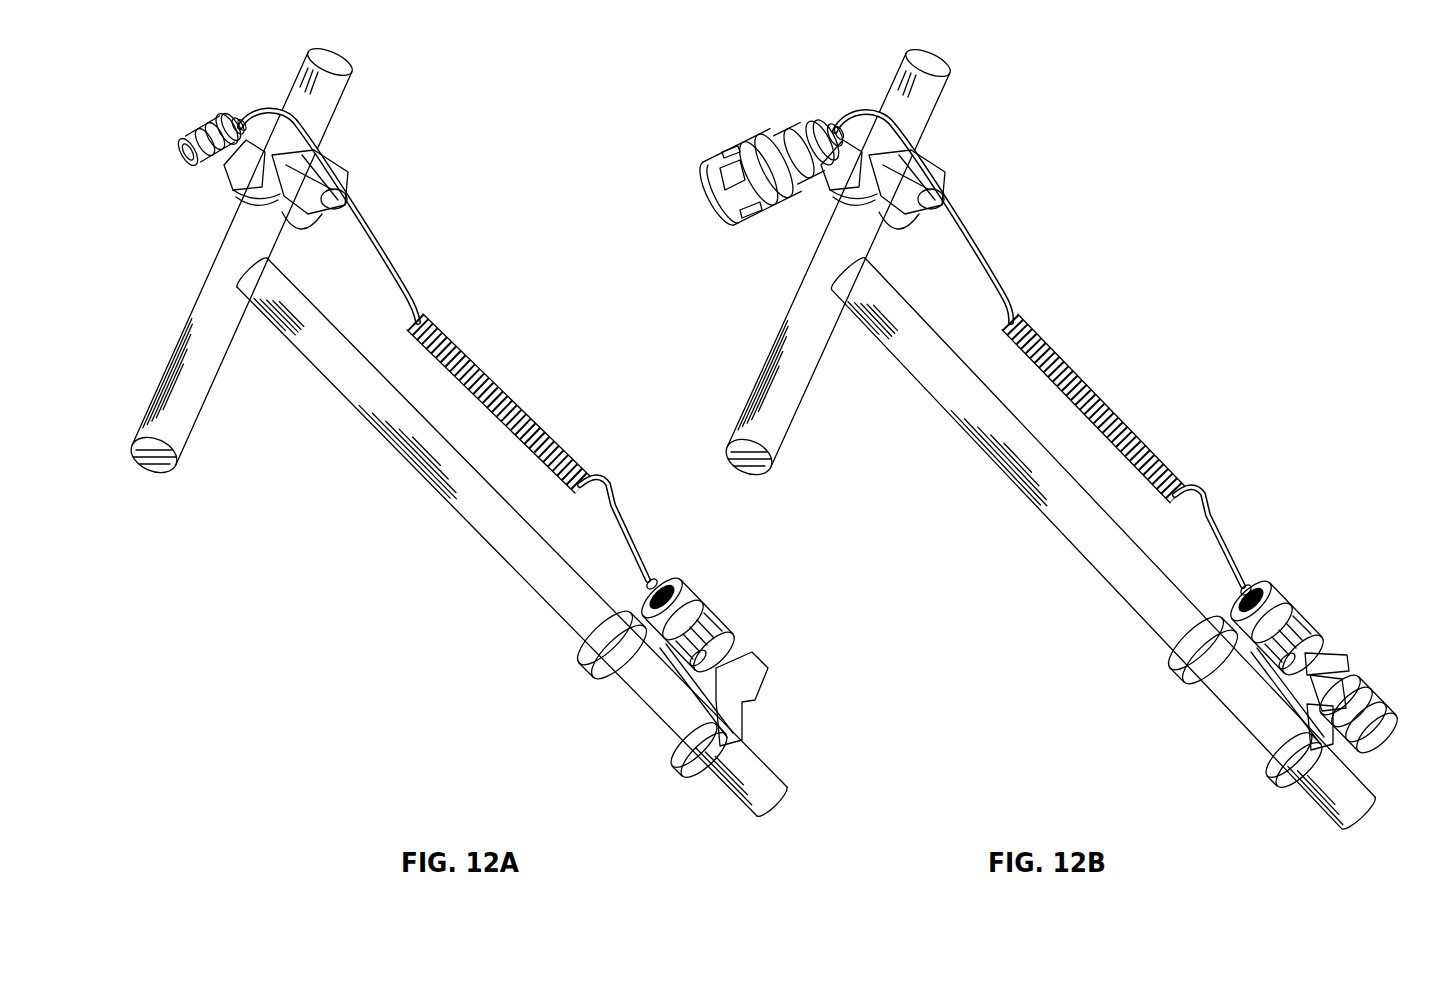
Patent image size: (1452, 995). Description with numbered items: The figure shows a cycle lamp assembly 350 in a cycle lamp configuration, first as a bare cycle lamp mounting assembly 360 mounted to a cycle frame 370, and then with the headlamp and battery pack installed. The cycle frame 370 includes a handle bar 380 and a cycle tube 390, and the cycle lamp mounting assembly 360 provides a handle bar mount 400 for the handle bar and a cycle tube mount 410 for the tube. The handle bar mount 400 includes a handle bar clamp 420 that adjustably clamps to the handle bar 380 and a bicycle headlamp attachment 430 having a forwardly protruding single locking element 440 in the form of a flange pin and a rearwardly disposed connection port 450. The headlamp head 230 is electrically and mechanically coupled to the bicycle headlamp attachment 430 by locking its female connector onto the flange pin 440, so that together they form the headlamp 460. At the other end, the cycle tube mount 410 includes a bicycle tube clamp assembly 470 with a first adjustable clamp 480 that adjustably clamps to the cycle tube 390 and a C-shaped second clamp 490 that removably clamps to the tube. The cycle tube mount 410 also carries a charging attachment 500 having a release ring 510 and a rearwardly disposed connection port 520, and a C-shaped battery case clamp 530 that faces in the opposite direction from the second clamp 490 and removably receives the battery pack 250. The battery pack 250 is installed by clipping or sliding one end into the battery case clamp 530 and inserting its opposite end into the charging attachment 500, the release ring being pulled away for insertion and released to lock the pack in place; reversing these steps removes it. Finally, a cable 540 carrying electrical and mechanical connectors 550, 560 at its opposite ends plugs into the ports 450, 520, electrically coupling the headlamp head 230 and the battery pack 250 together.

In FIG. 12B, the headlamp head 230 is at (711, 138).
In FIG. 12B, the battery pack 250 is at (1376, 686).
In FIG. 12B, the cycle lamp assembly 350 is at (746, 130).
In FIG. 12A, the cycle lamp mounting assembly 360 is at (188, 108).
In FIG. 12B, the cycle lamp mounting assembly 360 is at (804, 110).
In FIG. 12A, the cycle frame 370 is at (346, 430).
In FIG. 12B, the cycle frame 370 is at (932, 440).
In FIG. 12A, the handle bar 380 is at (205, 418).
In FIG. 12B, the handle bar 380 is at (796, 412).
In FIG. 12A, the cycle tube 390 is at (449, 508).
In FIG. 12B, the cycle tube 390 is at (1048, 516).
In FIG. 12A, the handle bar mount 400 is at (222, 201).
In FIG. 12A, the cycle tube mount 410 is at (564, 640).
In FIG. 12B, the cycle tube mount 410 is at (1154, 652).
In FIG. 12A, the handle bar clamp 420 is at (294, 244).
In FIG. 12A, the bicycle headlamp attachment 430 is at (206, 114).
In FIG. 12A, the single locking element 440 is at (175, 136).
In FIG. 12A, the connection port 450 is at (216, 108).
In FIG. 12B, the headlamp 460 is at (724, 235).
In FIG. 12A, the bicycle tube clamp assembly 470 is at (658, 580).
In FIG. 12B, the bicycle tube clamp assembly 470 is at (1250, 582).
In FIG. 12A, the first adjustable clamp 480 is at (600, 695).
In FIG. 12B, the first adjustable clamp 480 is at (1188, 703).
In FIG. 12A, the C-shaped second clamp 490 is at (692, 780).
In FIG. 12B, the C-shaped second clamp 490 is at (1282, 797).
In FIG. 12A, the charging attachment 500 is at (716, 597).
In FIG. 12B, the charging attachment 500 is at (1306, 607).
In FIG. 12A, the release ring 510 is at (737, 620).
In FIG. 12B, the release ring 510 is at (1327, 630).
In FIG. 12A, the connection port 520 is at (680, 582).
In FIG. 12A, the C-shaped battery case clamp 530 is at (761, 689).
In FIG. 12A, the cable 540 is at (529, 388).
In FIG. 12B, the cable 540 is at (1113, 387).
In FIG. 12B, the electrical and mechanical connector 550 is at (839, 128).
In FIG. 12B, the electrical and mechanical connector 560 is at (1272, 586).